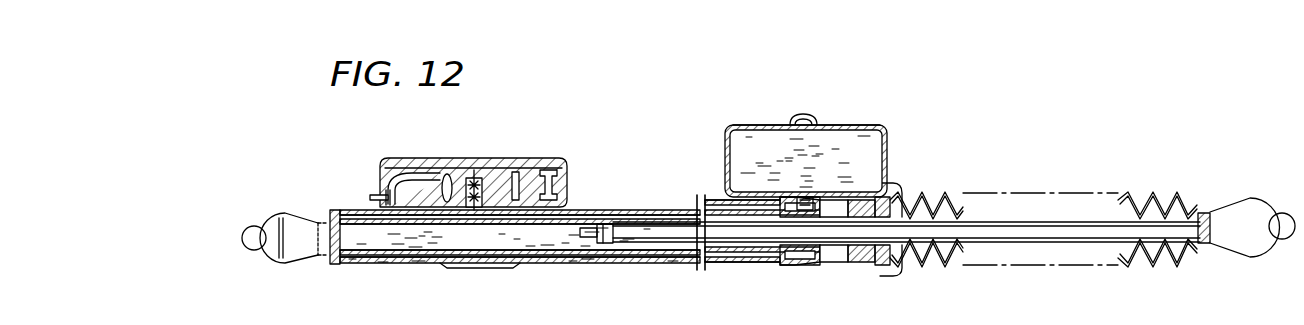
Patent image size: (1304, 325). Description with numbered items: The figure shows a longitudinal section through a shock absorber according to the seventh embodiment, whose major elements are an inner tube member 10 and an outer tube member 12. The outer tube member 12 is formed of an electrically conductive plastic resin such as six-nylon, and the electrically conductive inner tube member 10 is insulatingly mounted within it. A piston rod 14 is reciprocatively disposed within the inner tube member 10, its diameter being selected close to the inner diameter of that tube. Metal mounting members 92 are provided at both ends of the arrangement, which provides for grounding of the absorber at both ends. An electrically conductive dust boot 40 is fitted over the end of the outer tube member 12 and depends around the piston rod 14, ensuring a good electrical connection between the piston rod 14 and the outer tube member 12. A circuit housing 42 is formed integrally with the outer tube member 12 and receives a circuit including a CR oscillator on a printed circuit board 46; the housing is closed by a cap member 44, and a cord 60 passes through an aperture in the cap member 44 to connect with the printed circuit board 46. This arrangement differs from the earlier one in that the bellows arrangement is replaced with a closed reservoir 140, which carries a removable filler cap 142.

The inner tube member 10 is at (618, 260).
The outer tube member 12 is at (553, 264).
The piston rod 14 is at (658, 240).
The dust boot 40 is at (928, 266).
The circuit housing 42 is at (568, 193).
The cap member 44 is at (487, 157).
The printed circuit board 46 is at (438, 163).
The cord 60 is at (370, 198).
The metal mounting members 92 is at (297, 256).
The closed reservoir 140 is at (727, 162).
The removable filler cap 142 is at (747, 127).